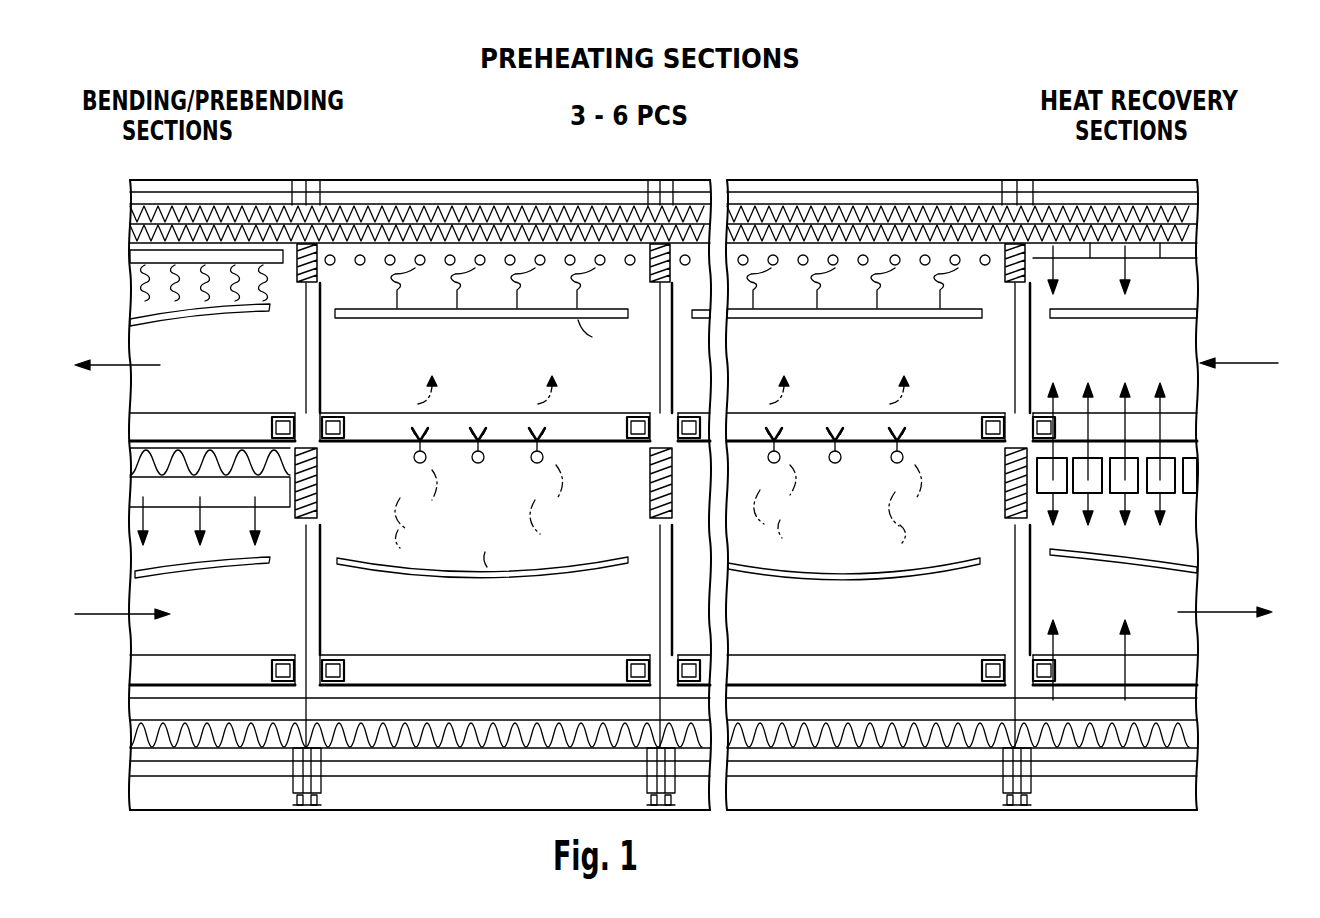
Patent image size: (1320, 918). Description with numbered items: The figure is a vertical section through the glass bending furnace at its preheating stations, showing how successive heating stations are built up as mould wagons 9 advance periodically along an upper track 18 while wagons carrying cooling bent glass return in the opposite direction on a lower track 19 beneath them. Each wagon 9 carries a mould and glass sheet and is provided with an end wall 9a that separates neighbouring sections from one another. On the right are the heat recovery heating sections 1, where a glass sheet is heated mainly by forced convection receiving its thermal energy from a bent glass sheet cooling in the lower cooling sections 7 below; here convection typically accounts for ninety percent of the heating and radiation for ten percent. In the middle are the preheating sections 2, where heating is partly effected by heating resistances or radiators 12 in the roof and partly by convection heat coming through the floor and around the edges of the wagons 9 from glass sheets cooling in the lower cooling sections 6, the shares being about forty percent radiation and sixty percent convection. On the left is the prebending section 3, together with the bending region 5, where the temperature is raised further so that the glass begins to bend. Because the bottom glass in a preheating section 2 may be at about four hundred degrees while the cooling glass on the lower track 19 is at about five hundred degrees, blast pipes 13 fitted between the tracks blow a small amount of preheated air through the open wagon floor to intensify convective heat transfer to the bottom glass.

The heating section 1 is at (1185, 281).
The preheating section 2 is at (343, 252).
The prebending section 3 is at (134, 291).
The bending/prebending section 5 is at (231, 628).
The lower cooling section 6 is at (484, 628).
The lower cooling section 7 is at (1109, 628).
The mould wagon 9 is at (356, 442).
The end wall 9a is at (322, 351).
The heating resistances or radiators 12 is at (540, 255).
The blast pipes 13 is at (531, 462).
The upper track 18 is at (1250, 362).
The lower track 19 is at (1232, 614).